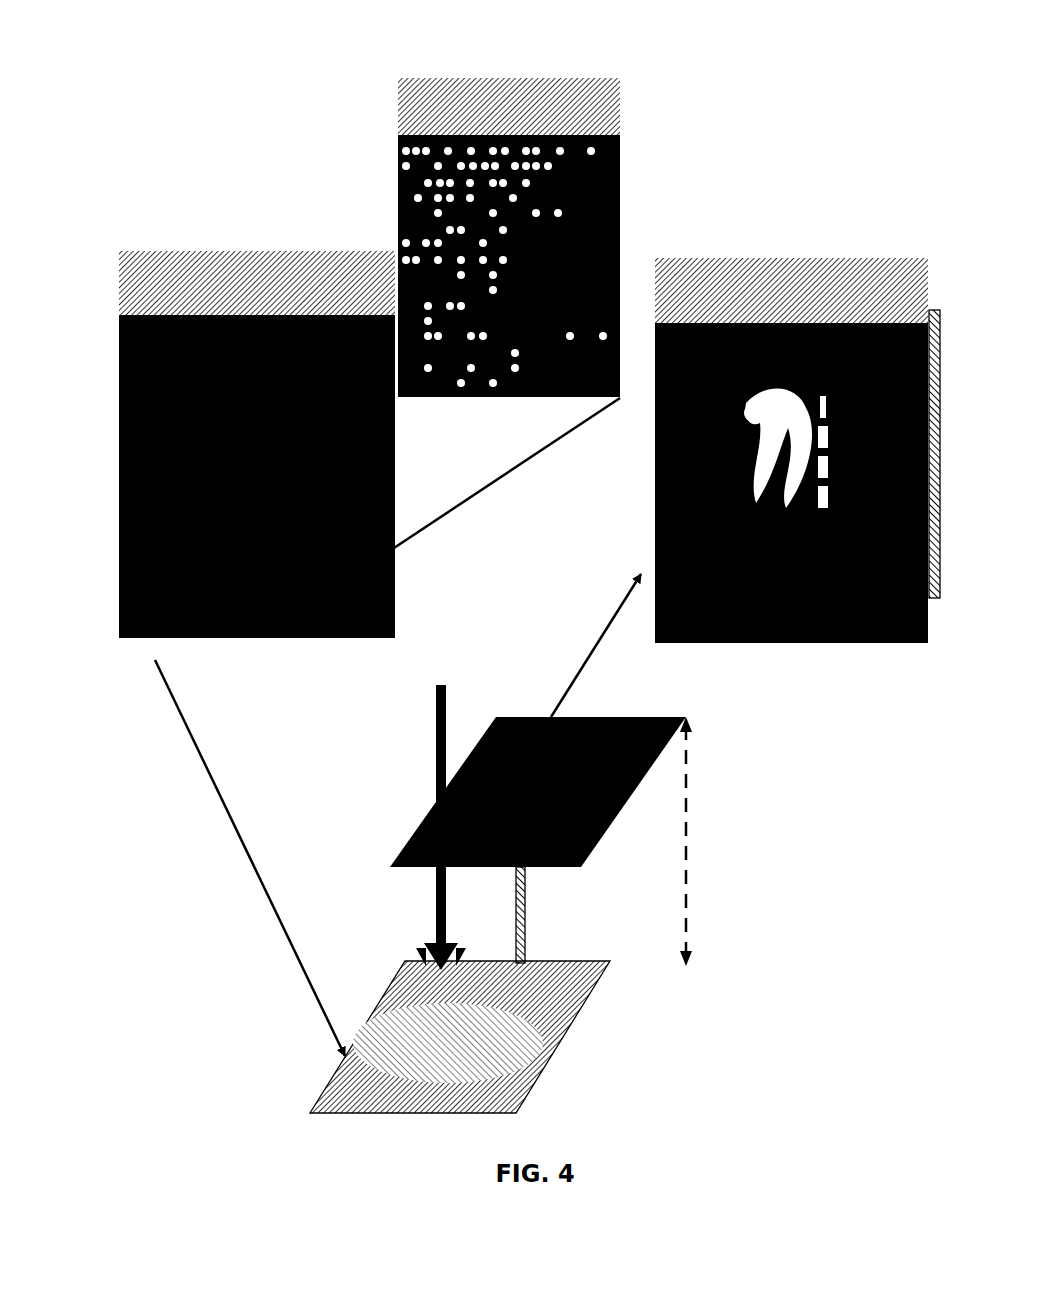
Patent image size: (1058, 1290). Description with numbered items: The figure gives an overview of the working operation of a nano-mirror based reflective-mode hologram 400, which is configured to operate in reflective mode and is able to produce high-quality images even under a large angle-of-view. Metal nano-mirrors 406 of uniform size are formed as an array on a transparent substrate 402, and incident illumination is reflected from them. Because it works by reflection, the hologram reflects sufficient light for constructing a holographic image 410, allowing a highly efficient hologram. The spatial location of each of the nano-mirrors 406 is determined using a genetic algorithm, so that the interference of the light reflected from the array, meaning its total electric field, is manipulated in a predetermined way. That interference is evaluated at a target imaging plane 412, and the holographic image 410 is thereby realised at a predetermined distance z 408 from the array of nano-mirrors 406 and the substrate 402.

The nano-mirror based reflective-mode hologram 400 is at (682, 56).
The transparent substrate 402 is at (510, 1077).
The nano-mirrors 406 is at (392, 143).
The predetermined distance z 408 is at (724, 841).
The holographic image 410 is at (864, 258).
The target imaging plane 412 is at (517, 708).